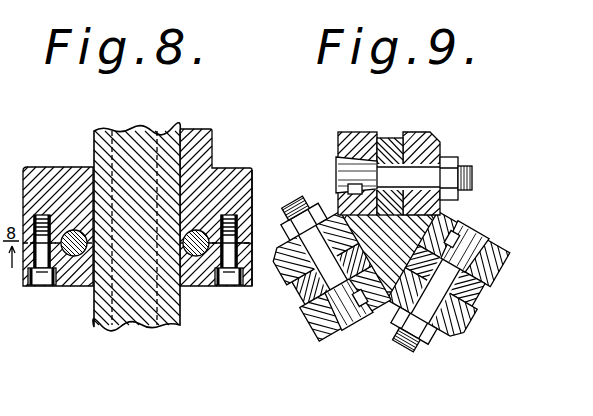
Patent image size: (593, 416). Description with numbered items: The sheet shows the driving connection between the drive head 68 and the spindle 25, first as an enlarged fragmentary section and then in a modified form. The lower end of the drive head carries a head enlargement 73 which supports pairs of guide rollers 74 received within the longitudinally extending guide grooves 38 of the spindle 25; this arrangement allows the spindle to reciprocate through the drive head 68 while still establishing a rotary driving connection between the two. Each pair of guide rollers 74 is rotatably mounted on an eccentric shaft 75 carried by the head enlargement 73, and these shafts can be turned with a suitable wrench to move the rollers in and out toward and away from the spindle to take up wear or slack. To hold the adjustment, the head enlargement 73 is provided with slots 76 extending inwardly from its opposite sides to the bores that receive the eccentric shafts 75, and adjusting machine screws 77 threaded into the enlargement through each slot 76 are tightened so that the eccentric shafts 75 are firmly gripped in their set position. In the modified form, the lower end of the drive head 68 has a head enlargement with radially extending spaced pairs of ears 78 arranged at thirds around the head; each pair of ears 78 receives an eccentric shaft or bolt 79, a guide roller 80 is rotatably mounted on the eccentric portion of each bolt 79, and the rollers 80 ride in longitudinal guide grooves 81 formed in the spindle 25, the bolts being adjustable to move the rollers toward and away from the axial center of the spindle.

In FIG. 8, the spindle 25 is at (148, 130).
In FIG. 9, the spindle 25 is at (470, 217).
In FIG. 8, the guide grooves 38 is at (113, 130).
In FIG. 8, the drive head 68 is at (216, 132).
In FIG. 9, the drive head 68 is at (386, 322).
In FIG. 8, the head enlargement 73 is at (253, 180).
In FIG. 8, the guide rollers 74 is at (62, 173).
In FIG. 8, the eccentric shaft 75 is at (78, 257).
In FIG. 8, the slots 76 is at (256, 245).
In FIG. 8, the adjusting machine screws 77 is at (40, 287).
In FIG. 9, the ears 78 is at (418, 130).
In FIG. 9, the eccentric shaft or bolt 79 is at (334, 172).
In FIG. 9, the guide roller 80 is at (487, 288).
In FIG. 9, the guide grooves 81 is at (350, 190).